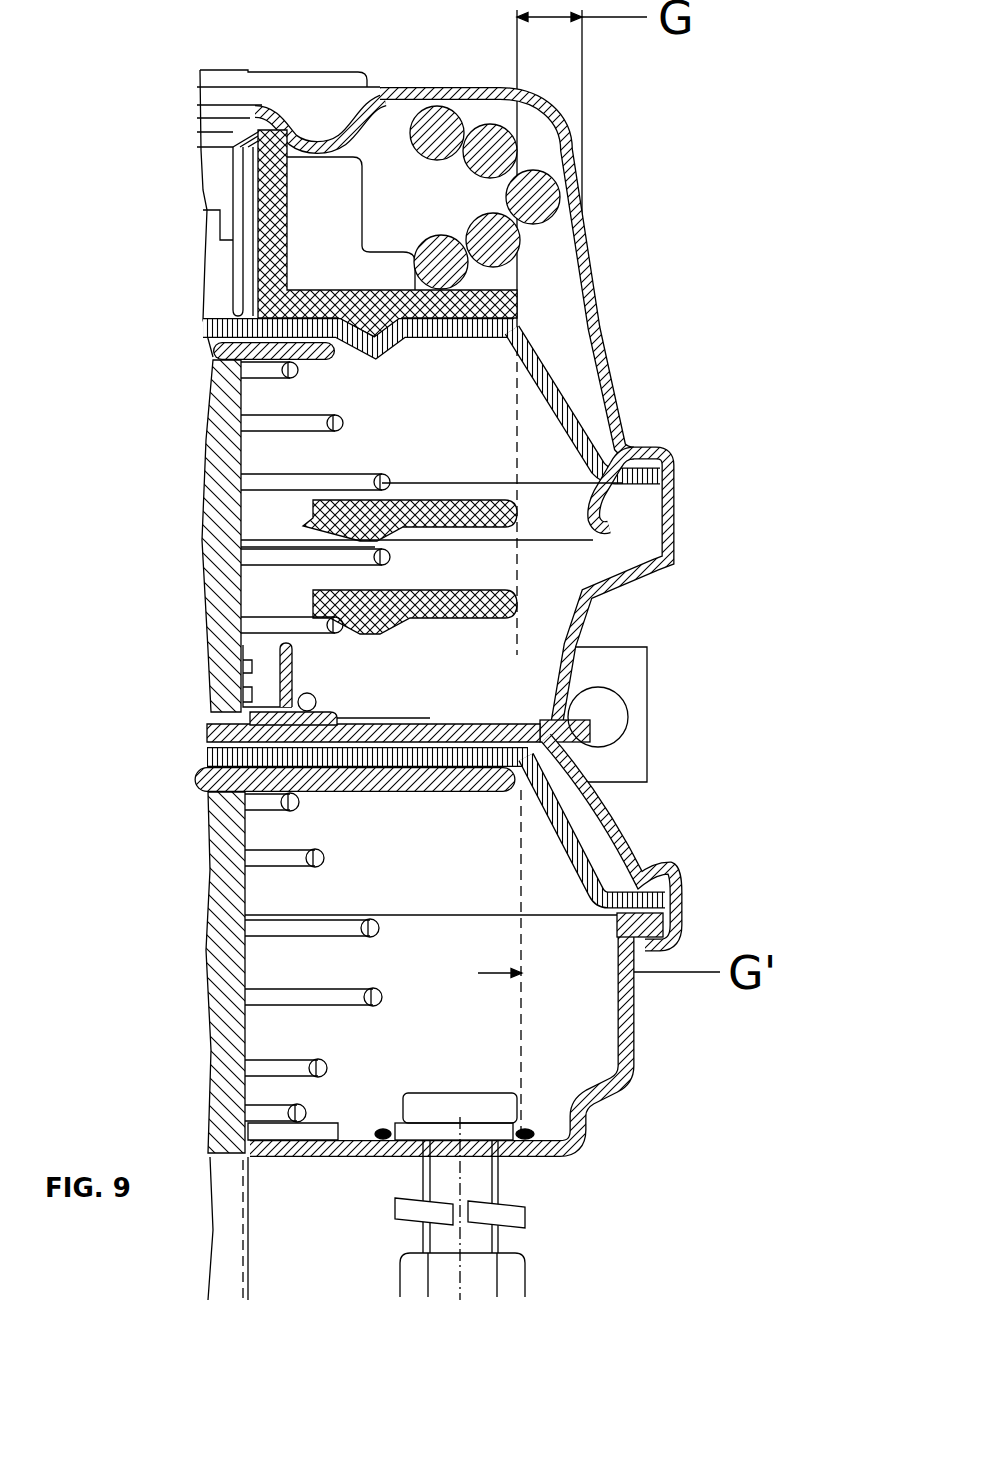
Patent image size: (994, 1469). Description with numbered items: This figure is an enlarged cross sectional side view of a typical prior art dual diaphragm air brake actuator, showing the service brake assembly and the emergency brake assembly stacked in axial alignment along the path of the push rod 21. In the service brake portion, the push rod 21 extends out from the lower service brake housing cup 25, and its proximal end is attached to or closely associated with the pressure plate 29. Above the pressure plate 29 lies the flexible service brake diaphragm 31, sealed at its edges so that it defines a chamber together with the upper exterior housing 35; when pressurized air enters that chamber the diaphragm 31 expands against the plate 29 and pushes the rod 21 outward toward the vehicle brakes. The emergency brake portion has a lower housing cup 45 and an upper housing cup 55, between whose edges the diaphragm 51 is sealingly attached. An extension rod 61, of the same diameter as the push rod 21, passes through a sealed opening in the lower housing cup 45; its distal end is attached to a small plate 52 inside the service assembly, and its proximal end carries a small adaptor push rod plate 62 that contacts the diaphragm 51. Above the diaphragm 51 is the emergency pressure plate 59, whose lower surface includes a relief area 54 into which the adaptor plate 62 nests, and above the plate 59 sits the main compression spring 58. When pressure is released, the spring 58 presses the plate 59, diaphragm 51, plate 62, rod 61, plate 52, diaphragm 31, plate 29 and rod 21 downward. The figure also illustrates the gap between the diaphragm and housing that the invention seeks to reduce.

The push rod 21 is at (240, 980).
The lower service brake housing cup 25 is at (628, 1012).
The pressure plate 29 is at (447, 780).
The service brake diaphragm 31 is at (587, 873).
The upper exterior housing 35 is at (600, 827).
The lower housing cup 45 is at (617, 587).
The diaphragm 51 is at (563, 438).
The small plate 52 is at (333, 737).
The relief area 54 is at (393, 357).
The upper housing cup 55 is at (600, 312).
The main compression spring 58 is at (547, 190).
The pressure plate 59 is at (518, 290).
The extension rod 61 is at (230, 450).
The adaptor push rod plate 62 is at (323, 353).